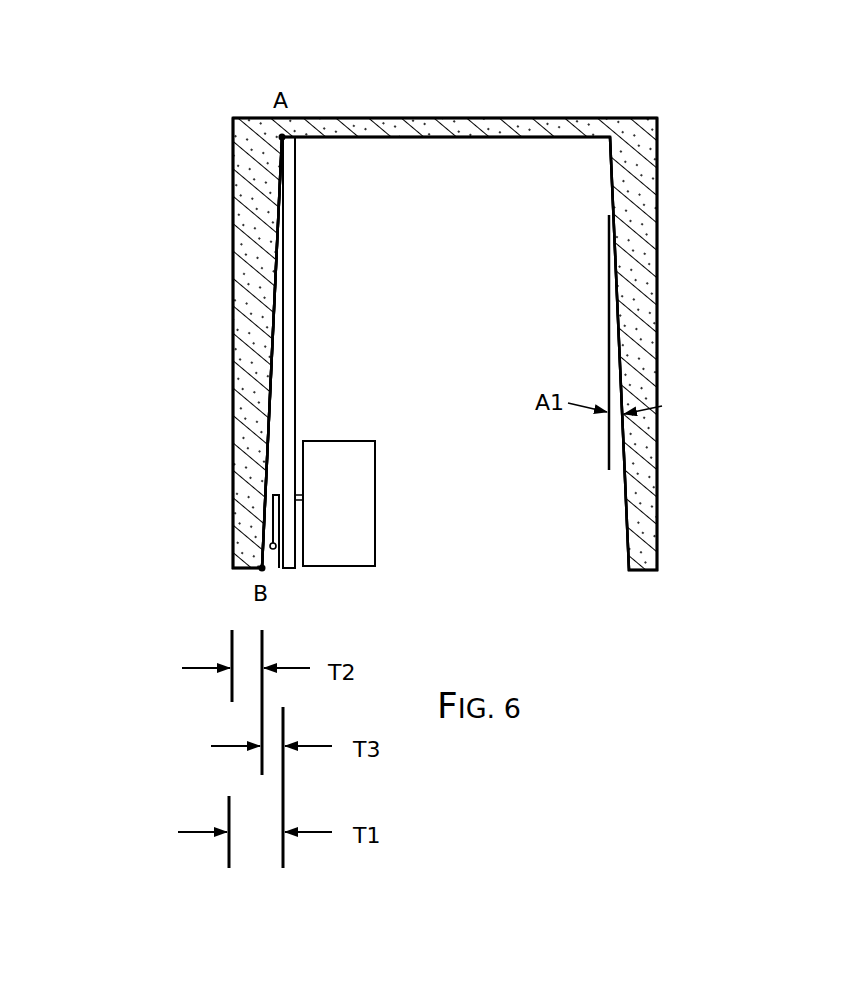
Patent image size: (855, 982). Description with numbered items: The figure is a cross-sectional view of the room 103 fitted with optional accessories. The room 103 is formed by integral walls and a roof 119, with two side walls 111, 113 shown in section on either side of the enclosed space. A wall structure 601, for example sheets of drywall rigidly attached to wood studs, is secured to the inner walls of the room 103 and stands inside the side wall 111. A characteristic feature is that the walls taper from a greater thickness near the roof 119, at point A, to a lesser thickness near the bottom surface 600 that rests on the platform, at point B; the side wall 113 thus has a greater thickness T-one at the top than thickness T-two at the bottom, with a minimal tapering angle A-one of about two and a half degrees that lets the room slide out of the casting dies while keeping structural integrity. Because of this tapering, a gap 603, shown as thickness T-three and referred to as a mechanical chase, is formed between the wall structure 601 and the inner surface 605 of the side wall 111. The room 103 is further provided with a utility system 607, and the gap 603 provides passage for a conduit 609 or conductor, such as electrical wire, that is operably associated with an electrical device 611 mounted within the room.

The room 103 is at (122, 83).
The roof 119 is at (481, 93).
The side wall 111 is at (187, 341).
The side wall 113 is at (669, 311).
The bottom surface 600 is at (646, 574).
The wall structure 601 is at (296, 260).
The inner surface 605 is at (274, 361).
The gap 603 is at (276, 450).
The conduit 609 is at (272, 520).
The electrical device 611 is at (376, 490).
The utility system 607 is at (379, 594).